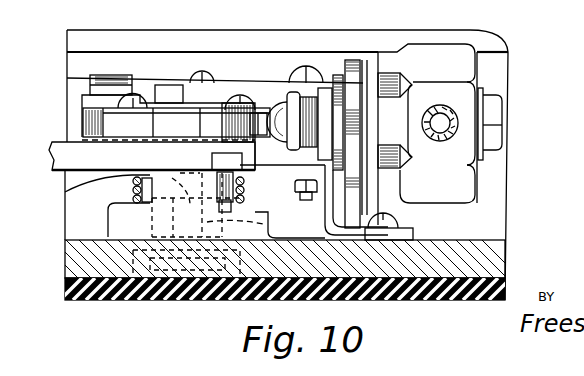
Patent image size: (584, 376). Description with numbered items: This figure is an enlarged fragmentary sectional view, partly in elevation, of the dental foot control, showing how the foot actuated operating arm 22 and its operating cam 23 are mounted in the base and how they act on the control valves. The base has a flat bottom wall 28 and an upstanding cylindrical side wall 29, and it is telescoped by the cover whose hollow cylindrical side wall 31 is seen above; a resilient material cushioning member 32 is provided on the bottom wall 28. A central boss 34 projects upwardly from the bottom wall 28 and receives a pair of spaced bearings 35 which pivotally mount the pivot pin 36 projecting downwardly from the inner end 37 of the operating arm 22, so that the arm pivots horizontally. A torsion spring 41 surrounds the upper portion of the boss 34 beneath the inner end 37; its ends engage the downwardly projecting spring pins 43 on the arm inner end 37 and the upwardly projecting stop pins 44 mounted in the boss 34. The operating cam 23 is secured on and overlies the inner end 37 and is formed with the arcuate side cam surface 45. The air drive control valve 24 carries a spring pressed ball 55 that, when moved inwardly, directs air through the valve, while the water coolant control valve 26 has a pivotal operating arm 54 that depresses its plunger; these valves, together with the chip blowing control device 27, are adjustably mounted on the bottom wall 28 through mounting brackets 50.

The foot actuated operating arm 22 is at (74, 146).
The operating cam 23 is at (170, 110).
The air drive control valve 24 is at (482, 171).
The water coolant control valve 26 is at (249, 80).
The chip blowing control device 27 is at (510, 251).
The flat bottom wall 28 is at (488, 262).
The upstanding cylindrical side wall 29 is at (498, 196).
The hollow cylindrical side wall 31 is at (310, 34).
The resilient material cushioning member 32 is at (100, 298).
The central boss 34 is at (255, 212).
The spaced bearings 35 is at (172, 170).
The pivot pin 36 is at (270, 226).
The inner end of operating arm 37 is at (195, 158).
The torsion spring 41 is at (80, 182).
The spring pins 43 is at (240, 181).
The stop pins 44 is at (197, 174).
The side cam surface 45 is at (244, 112).
The mounting brackets 50 is at (402, 232).
The pivotal operating arm 54 is at (215, 108).
The spring pressed ball 55 is at (282, 103).